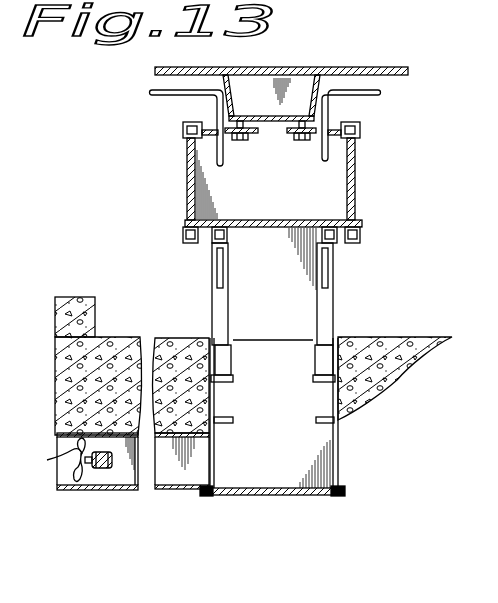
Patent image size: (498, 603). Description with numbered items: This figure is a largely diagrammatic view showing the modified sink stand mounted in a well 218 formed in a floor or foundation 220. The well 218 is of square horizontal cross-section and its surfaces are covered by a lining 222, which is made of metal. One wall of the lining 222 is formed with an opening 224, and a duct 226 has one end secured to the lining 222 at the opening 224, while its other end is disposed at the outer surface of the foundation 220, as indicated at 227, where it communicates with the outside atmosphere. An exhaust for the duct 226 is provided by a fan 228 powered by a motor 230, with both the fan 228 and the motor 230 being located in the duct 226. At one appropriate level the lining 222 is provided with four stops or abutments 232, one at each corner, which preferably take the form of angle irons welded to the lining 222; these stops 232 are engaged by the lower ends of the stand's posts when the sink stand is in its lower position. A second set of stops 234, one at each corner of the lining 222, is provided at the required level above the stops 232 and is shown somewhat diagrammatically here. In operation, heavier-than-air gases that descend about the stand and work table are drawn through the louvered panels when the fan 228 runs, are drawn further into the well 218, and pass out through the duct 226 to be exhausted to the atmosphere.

The well 218 is at (253, 490).
The floor or foundation 220 is at (190, 338).
The lining 222 is at (341, 457).
The opening 224 is at (216, 477).
The duct 226 is at (183, 478).
The outer end of duct 227 is at (55, 477).
The fan 228 is at (49, 460).
The motor 230 is at (103, 468).
The stops or abutments 232 is at (317, 420).
The stops 234 is at (313, 378).